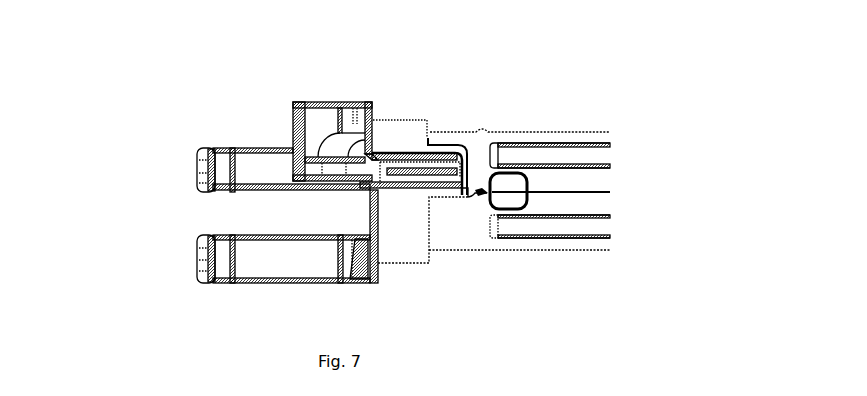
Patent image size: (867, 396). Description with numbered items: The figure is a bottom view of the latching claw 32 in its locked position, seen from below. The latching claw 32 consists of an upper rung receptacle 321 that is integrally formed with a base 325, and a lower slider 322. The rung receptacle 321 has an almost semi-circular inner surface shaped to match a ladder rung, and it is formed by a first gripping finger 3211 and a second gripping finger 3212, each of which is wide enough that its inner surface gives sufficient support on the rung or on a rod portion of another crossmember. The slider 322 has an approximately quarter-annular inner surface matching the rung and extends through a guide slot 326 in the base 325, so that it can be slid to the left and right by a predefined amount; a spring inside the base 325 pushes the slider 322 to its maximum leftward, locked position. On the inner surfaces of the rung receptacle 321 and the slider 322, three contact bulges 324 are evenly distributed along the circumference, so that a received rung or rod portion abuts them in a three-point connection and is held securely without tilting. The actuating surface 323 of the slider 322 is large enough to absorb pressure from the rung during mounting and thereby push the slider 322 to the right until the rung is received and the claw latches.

The latching claw 32 is at (305, 78).
The rung receptacle 321 is at (174, 203).
The first gripping finger 3211 is at (196, 263).
The second gripping finger 3212 is at (196, 174).
The slider 322 is at (358, 102).
The actuating surface 323 is at (320, 130).
The contact bulge 324 is at (232, 283).
The base 325 is at (570, 156).
The guide slot 326 is at (414, 165).